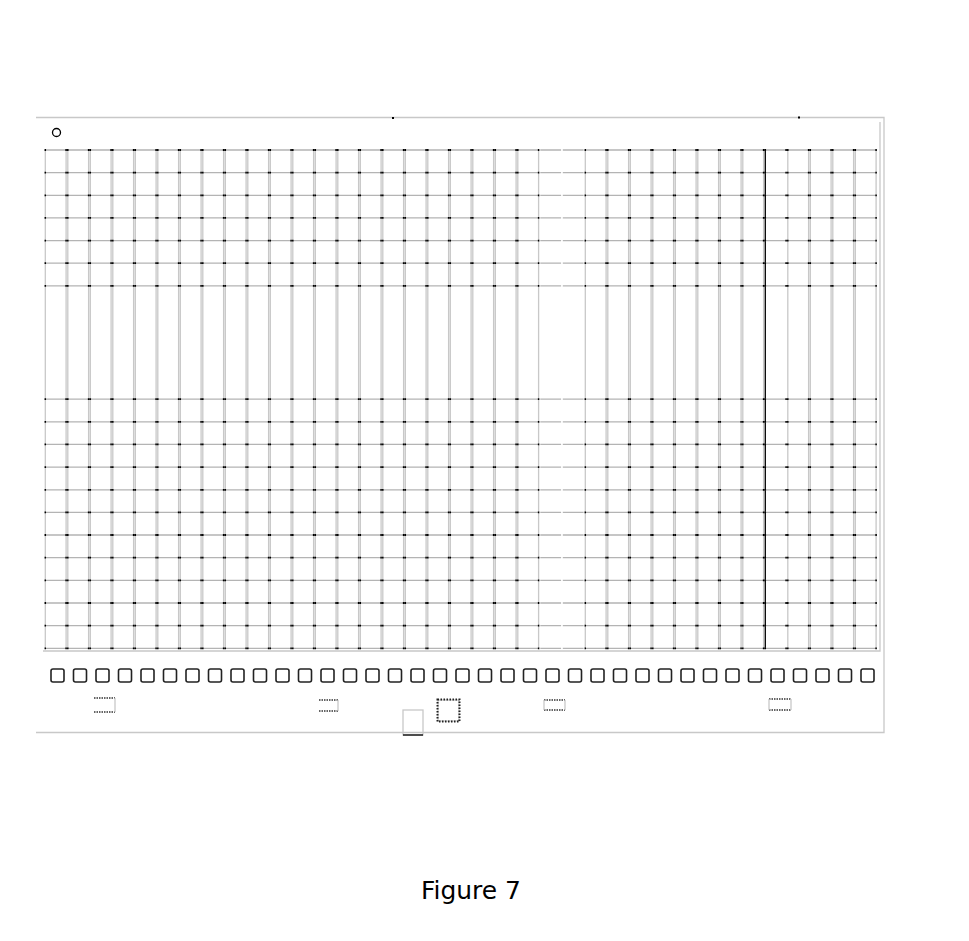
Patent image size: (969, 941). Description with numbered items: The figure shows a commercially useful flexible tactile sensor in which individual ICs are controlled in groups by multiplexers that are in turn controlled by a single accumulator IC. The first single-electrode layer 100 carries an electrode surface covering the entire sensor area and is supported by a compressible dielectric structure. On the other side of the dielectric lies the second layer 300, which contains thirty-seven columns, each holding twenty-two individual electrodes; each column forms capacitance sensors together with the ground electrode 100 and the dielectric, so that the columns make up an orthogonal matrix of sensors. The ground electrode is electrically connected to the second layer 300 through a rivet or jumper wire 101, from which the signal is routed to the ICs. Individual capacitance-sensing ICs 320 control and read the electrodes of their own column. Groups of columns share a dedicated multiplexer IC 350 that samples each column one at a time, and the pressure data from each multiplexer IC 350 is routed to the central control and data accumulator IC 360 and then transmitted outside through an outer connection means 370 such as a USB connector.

The first single-electrode layer 100 is at (380, 128).
The rivet or jumper wire 101 is at (56, 128).
The second layer 300 is at (799, 116).
The capacitance-sensing IC 320 is at (57, 682).
The multiplexer IC 350 is at (780, 704).
The central control and data accumulator IC 360 is at (452, 711).
The outer connection means 370 is at (412, 722).